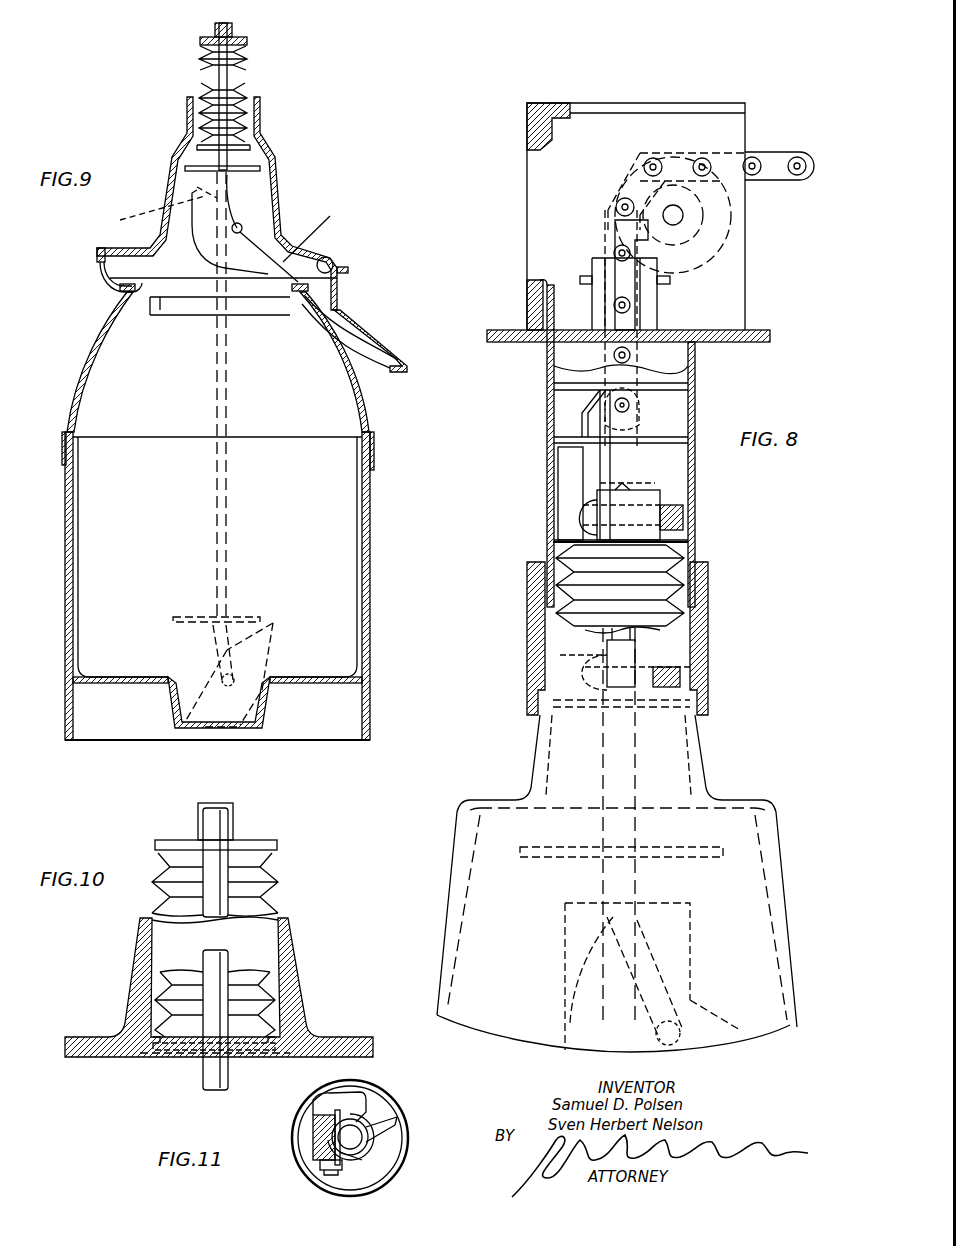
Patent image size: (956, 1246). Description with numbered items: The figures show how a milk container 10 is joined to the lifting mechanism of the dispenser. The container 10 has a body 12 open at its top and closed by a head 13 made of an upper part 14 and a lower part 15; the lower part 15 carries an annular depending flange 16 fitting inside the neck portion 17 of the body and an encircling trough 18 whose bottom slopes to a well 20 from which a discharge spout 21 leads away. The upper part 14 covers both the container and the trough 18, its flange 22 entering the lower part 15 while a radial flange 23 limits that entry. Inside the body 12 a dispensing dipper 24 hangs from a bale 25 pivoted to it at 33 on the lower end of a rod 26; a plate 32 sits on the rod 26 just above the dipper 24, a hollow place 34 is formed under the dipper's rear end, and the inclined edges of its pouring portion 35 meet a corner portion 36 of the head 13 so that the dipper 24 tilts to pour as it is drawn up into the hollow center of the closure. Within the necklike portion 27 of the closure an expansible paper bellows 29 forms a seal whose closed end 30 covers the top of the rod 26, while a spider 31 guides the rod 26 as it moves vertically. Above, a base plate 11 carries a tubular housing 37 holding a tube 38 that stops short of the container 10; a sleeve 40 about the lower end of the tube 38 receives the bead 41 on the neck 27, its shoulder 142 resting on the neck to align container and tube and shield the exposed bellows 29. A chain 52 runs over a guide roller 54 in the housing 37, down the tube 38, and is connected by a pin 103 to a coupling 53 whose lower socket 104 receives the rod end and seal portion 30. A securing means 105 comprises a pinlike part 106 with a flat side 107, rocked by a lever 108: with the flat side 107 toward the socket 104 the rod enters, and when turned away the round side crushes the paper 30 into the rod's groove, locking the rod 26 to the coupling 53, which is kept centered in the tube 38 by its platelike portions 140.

In FIG. 9, the container 10 is at (63, 515).
In FIG. 8, the container 10 is at (455, 838).
In FIG. 8, the base or plate 11 is at (745, 340).
In FIG. 9, the body 12 is at (372, 518).
In FIG. 9, the closure or head 13 is at (304, 223).
In FIG. 8, the closure or head 13 is at (450, 905).
In FIG. 9, the upper part 14 is at (168, 197).
In FIG. 8, the upper part 14 is at (753, 878).
In FIG. 9, the lower part 15 is at (100, 281).
In FIG. 9, the annular depending flange 16 is at (163, 300).
In FIG. 9, the neck portion 17 is at (125, 308).
In FIG. 9, the trough 18 is at (118, 292).
In FIG. 9, the well or depressed portion 20 is at (310, 288).
In FIG. 9, the discharge spout 21 is at (357, 328).
In FIG. 9, the flange 22 is at (330, 262).
In FIG. 9, the radial flange 23 is at (348, 270).
In FIG. 9, the dispensing dipper 24 is at (212, 232).
In FIG. 8, the dispensing dipper 24 is at (675, 950).
In FIG. 9, the bale 25 is at (213, 636).
In FIG. 10, the bale 25 is at (270, 1050).
In FIG. 8, the bale 25 is at (625, 882).
In FIG. 9, the rod 26 is at (220, 486).
In FIG. 10, the rod 26 is at (203, 1073).
In FIG. 11, the rod 26 is at (362, 1137).
In FIG. 8, the rod 26 is at (620, 768).
In FIG. 9, the necklike portion 27 is at (262, 130).
In FIG. 10, the necklike portion 27 is at (290, 960).
In FIG. 8, the necklike portion 27 is at (675, 735).
In FIG. 9, the bellows-like structure 29 is at (247, 58).
In FIG. 10, the bellows-like structure 29 is at (278, 886).
In FIG. 8, the bellows-like structure 29 is at (655, 585).
In FIG. 9, the closed end of seal 30 is at (232, 30).
In FIG. 10, the closed end of seal 30 is at (237, 835).
In FIG. 11, the closed end of seal 30 is at (437, 1108).
In FIG. 10, the spider 31 is at (190, 1057).
In FIG. 9, the plate 32 is at (258, 167).
In FIG. 8, the plate 32 is at (535, 852).
In FIG. 9, the pivot 33 is at (247, 215).
In FIG. 9, the socket or hollow place 34 is at (223, 224).
In FIG. 9, the pouring portion 35 is at (313, 252).
In FIG. 9, the corner portion 36 is at (243, 228).
In FIG. 8, the tubular housing 37 is at (527, 192).
In FIG. 11, the tube 38 is at (402, 1172).
In FIG. 8, the tube 38 is at (547, 412).
In FIG. 8, the sleeve 40 is at (700, 660).
In FIG. 8, the bead 41 is at (670, 698).
In FIG. 8, the chain 52 is at (800, 158).
In FIG. 11, the coupling 53 is at (380, 1108).
In FIG. 8, the coupling 53 is at (667, 465).
In FIG. 8, the guide pulley or roller 54 is at (690, 217).
In FIG. 8, the pin 103 is at (630, 405).
In FIG. 11, the socket 104 is at (356, 1160).
In FIG. 8, the socket 104 is at (680, 504).
In FIG. 11, the securing means 105 is at (351, 1090).
In FIG. 8, the securing means 105 is at (573, 467).
In FIG. 11, the pinlike part 106 is at (320, 1162).
In FIG. 8, the pinlike part 106 is at (683, 528).
In FIG. 11, the flat side 107 is at (312, 1140).
In FIG. 11, the lever 108 is at (378, 1097).
In FIG. 8, the lever 108 is at (572, 457).
In FIG. 8, the link plate 140 is at (665, 385).
In FIG. 8, the shoulder 142 is at (662, 659).